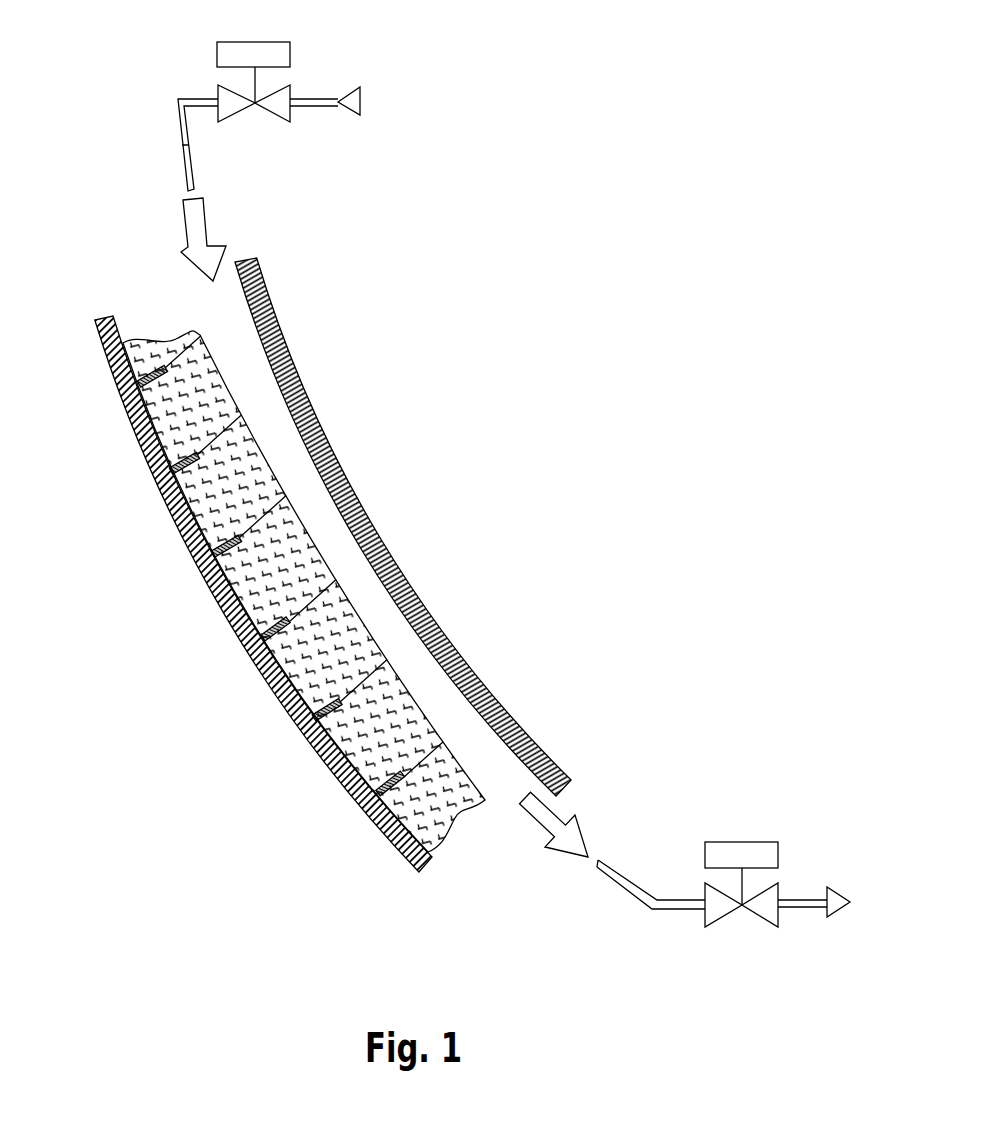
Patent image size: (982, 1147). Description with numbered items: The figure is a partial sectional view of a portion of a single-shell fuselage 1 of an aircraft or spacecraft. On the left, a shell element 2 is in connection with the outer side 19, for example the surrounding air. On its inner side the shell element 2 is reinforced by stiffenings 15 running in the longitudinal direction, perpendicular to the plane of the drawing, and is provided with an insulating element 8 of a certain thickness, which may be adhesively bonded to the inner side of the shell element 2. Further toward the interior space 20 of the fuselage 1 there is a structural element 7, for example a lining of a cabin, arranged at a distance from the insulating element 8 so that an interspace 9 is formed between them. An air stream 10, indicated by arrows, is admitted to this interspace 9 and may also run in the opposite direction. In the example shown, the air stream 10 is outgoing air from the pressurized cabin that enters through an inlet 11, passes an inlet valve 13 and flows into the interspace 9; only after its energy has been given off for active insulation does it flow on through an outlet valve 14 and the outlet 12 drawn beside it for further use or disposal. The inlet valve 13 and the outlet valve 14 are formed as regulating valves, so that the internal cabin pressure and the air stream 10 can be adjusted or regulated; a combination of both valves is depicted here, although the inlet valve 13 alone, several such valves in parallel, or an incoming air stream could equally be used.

The fuselage 1 is at (100, 495).
The shell element 2 is at (134, 310).
The structural element 7 is at (334, 455).
The insulating element 8 is at (275, 698).
The interspace 9 is at (338, 562).
The air stream 10 is at (200, 227).
The inlet 11 is at (353, 100).
The air outlet 12 is at (837, 903).
The inlet valve 13 is at (240, 108).
The outlet valve 14 is at (765, 905).
The stiffenings 15 is at (238, 547).
The outer side 19 is at (80, 737).
The interior space 20 is at (565, 447).